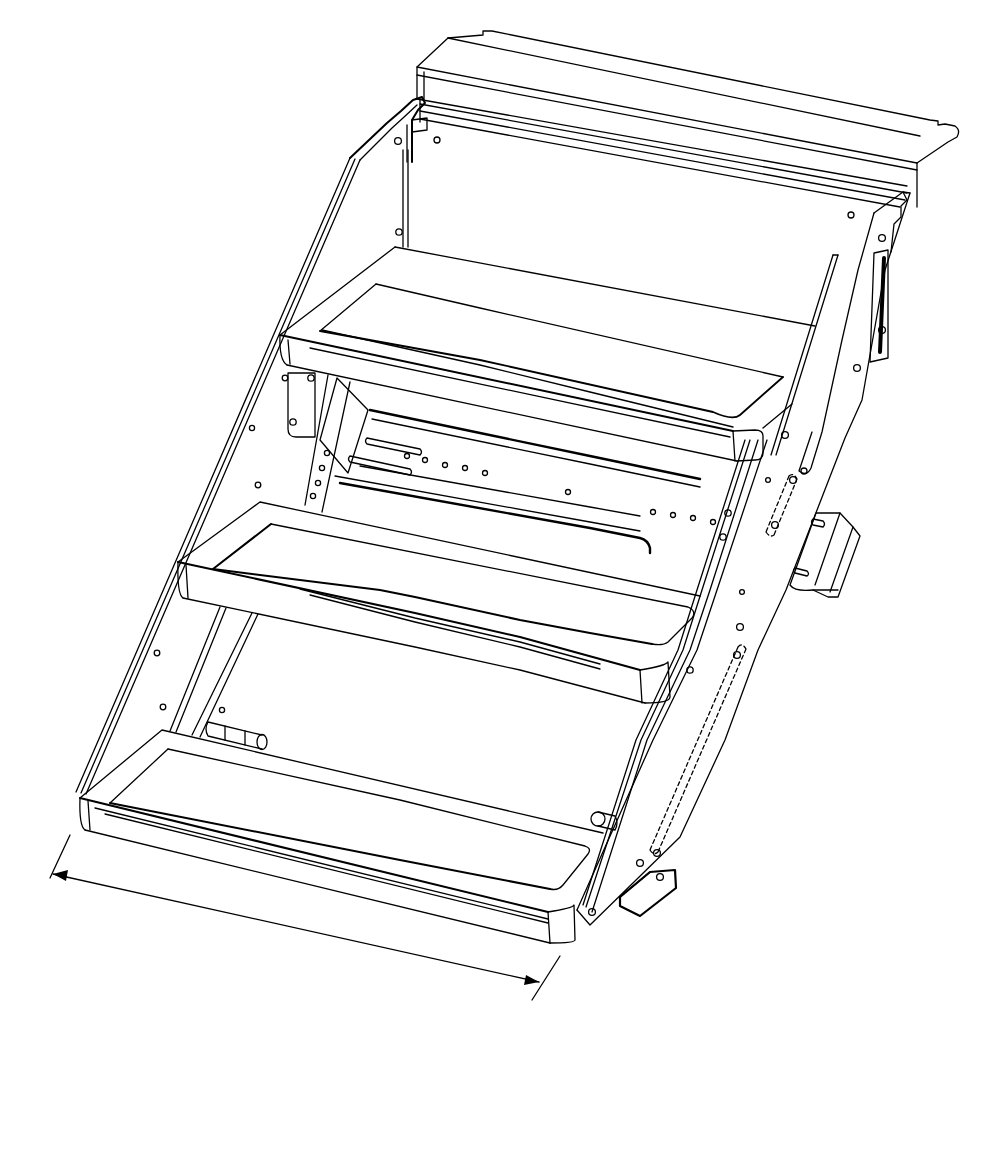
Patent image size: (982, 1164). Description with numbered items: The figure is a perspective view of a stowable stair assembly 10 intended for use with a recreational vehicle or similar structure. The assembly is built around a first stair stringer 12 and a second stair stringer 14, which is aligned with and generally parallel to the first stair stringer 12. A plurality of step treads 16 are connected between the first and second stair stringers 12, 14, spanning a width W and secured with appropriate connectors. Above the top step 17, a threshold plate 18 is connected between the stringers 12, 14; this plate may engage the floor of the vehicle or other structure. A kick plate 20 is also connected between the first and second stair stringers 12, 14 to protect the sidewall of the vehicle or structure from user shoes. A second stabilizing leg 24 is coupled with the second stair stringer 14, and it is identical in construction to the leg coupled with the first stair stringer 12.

The stowable stair assembly 10 is at (263, 101).
The first stair stringer 12 is at (660, 797).
The second stair stringer 14 is at (247, 458).
The step treads 16 is at (760, 417).
The top step 17 is at (393, 270).
The threshold plate 18 is at (875, 130).
The kick plate 20 is at (463, 200).
The second stabilizing leg 24 is at (243, 660).